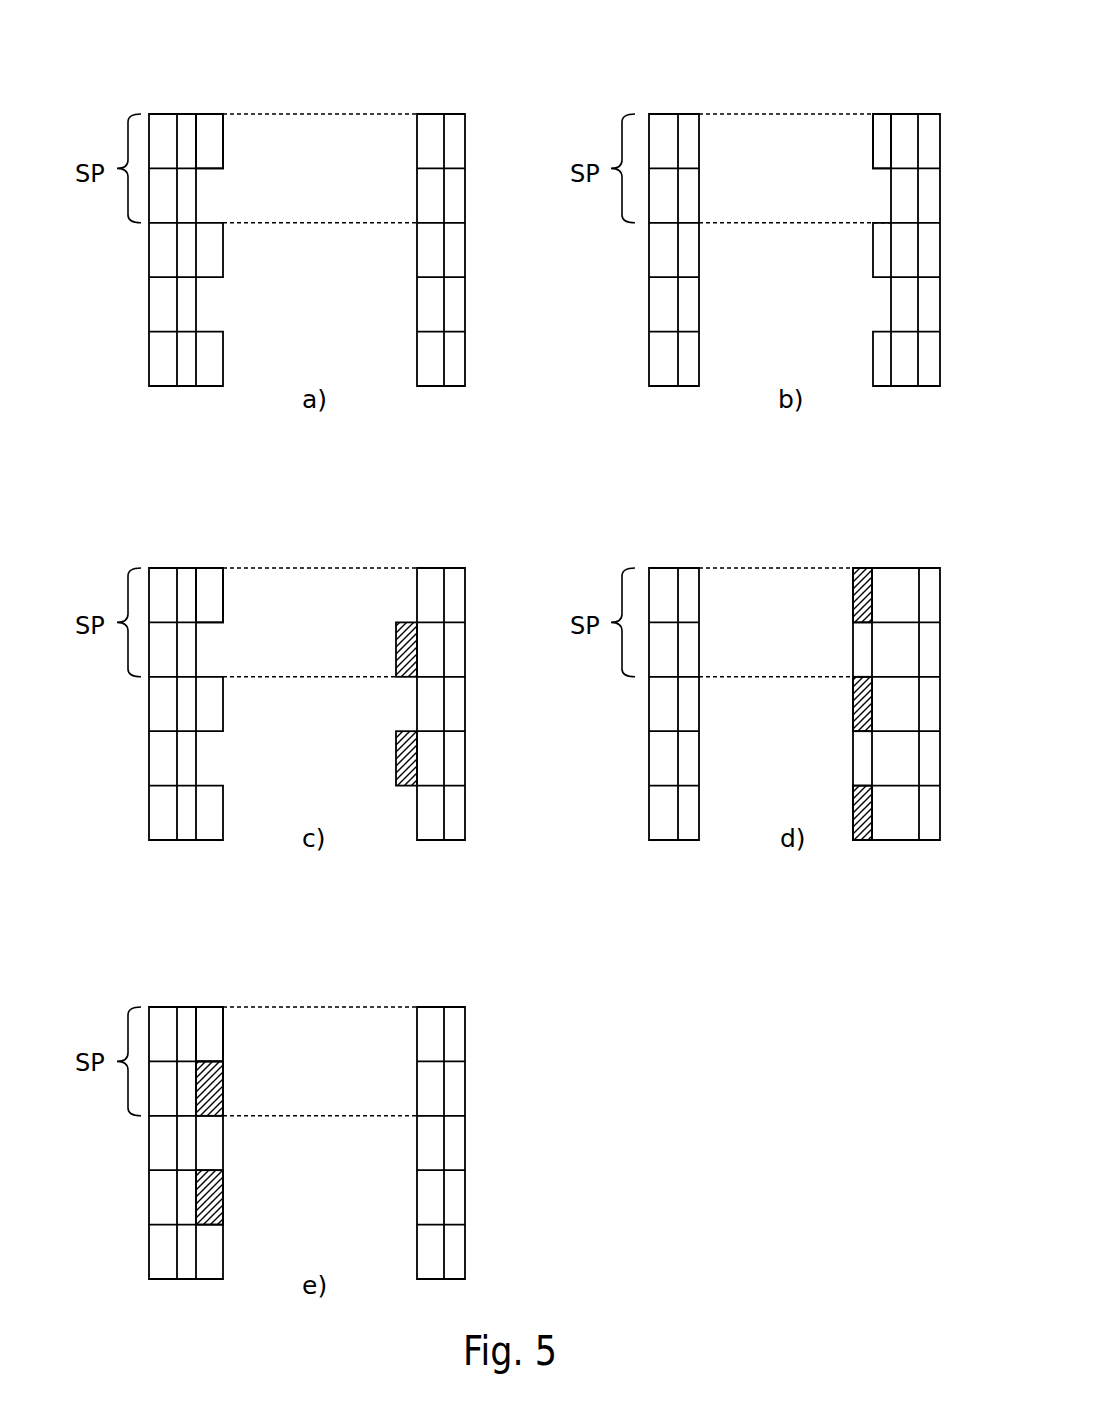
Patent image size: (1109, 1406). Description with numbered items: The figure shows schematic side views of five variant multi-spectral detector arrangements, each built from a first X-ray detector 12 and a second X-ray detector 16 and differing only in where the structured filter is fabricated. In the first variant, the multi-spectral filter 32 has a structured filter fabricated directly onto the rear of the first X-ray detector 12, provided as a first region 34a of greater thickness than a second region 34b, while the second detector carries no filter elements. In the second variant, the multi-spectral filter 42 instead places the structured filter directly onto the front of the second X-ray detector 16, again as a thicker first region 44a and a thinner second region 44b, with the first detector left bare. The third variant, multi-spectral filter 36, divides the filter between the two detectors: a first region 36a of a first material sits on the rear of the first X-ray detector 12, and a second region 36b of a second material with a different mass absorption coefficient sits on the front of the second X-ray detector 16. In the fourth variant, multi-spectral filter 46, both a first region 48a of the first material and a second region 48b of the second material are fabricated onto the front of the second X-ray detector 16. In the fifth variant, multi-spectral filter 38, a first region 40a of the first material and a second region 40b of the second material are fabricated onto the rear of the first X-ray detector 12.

The first X-ray detector 12 is at (173, 91).
The second X-ray detector 16 is at (443, 91).
The multi-spectral filter 32 is at (308, 96).
The first region 34a is at (224, 142).
The second region 34b is at (203, 205).
The multi-spectral filter 42 is at (778, 96).
The first region 44a is at (873, 137).
The second region 44b is at (891, 193).
The multi-spectral filter 36 is at (309, 552).
The first region 36a is at (224, 593).
The second region 36b is at (396, 650).
The multi-spectral filter 46 is at (778, 596).
The first region 48a is at (853, 698).
The second region 48b is at (853, 765).
The multi-spectral filter 38 is at (314, 984).
The first region 40a is at (224, 1032).
The second region 40b is at (224, 1082).